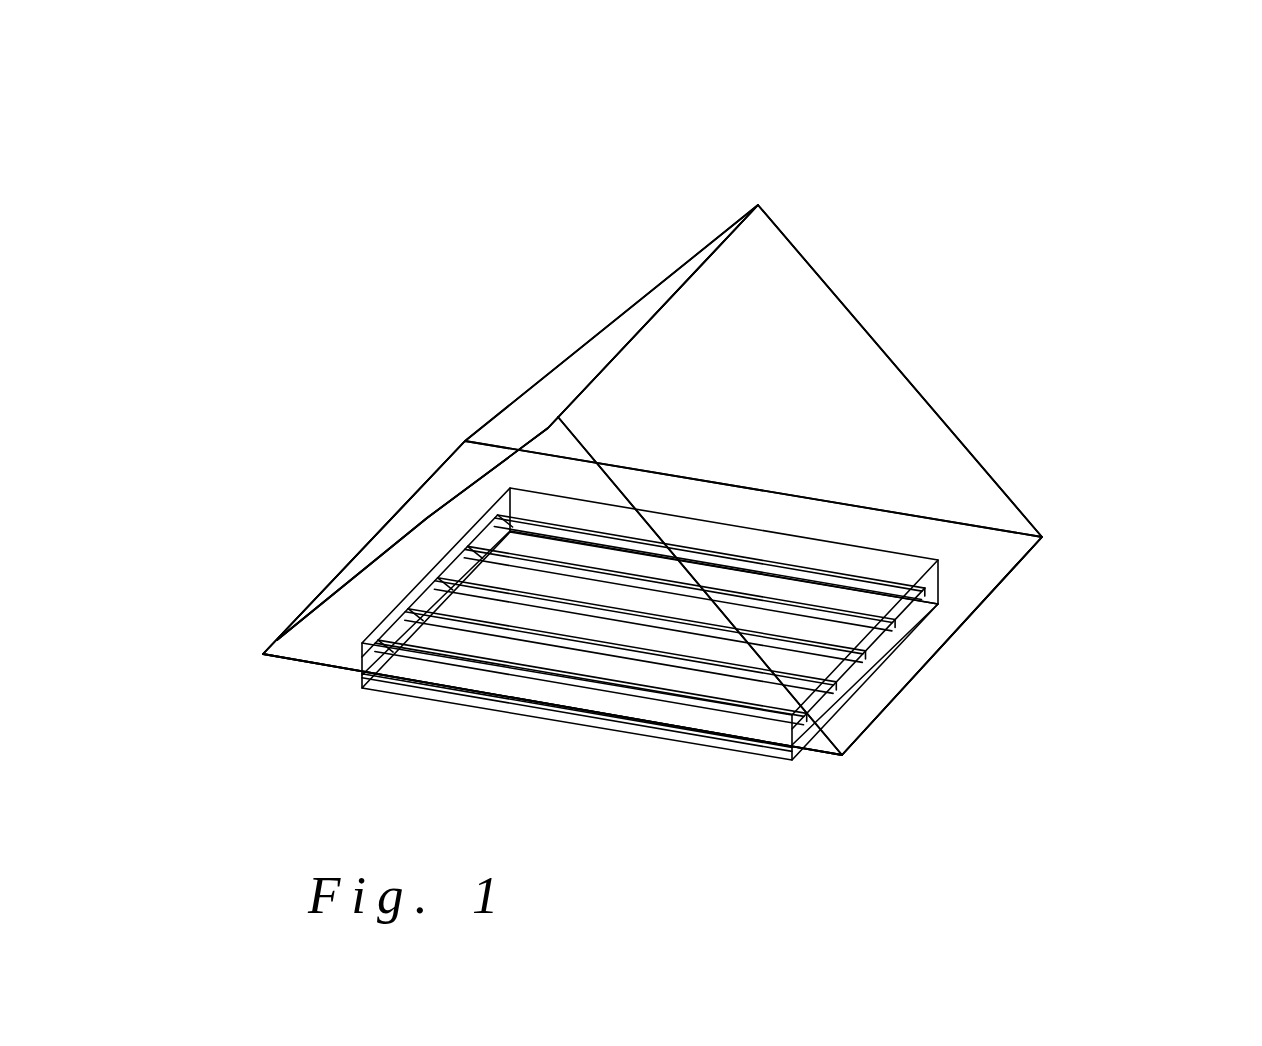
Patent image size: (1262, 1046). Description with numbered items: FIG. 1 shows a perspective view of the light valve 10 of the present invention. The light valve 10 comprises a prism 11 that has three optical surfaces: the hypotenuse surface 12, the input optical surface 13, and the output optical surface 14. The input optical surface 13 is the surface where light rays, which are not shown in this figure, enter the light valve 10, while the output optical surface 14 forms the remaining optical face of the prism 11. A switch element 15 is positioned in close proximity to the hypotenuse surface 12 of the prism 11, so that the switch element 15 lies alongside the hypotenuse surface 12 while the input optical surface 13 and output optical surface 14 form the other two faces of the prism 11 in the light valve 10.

The light valve 10 is at (505, 292).
The prism 11 is at (858, 325).
The hypotenuse surface 12 is at (303, 678).
The input optical surface 13 is at (752, 392).
The output optical surface 14 is at (463, 472).
The switch element 15 is at (617, 718).